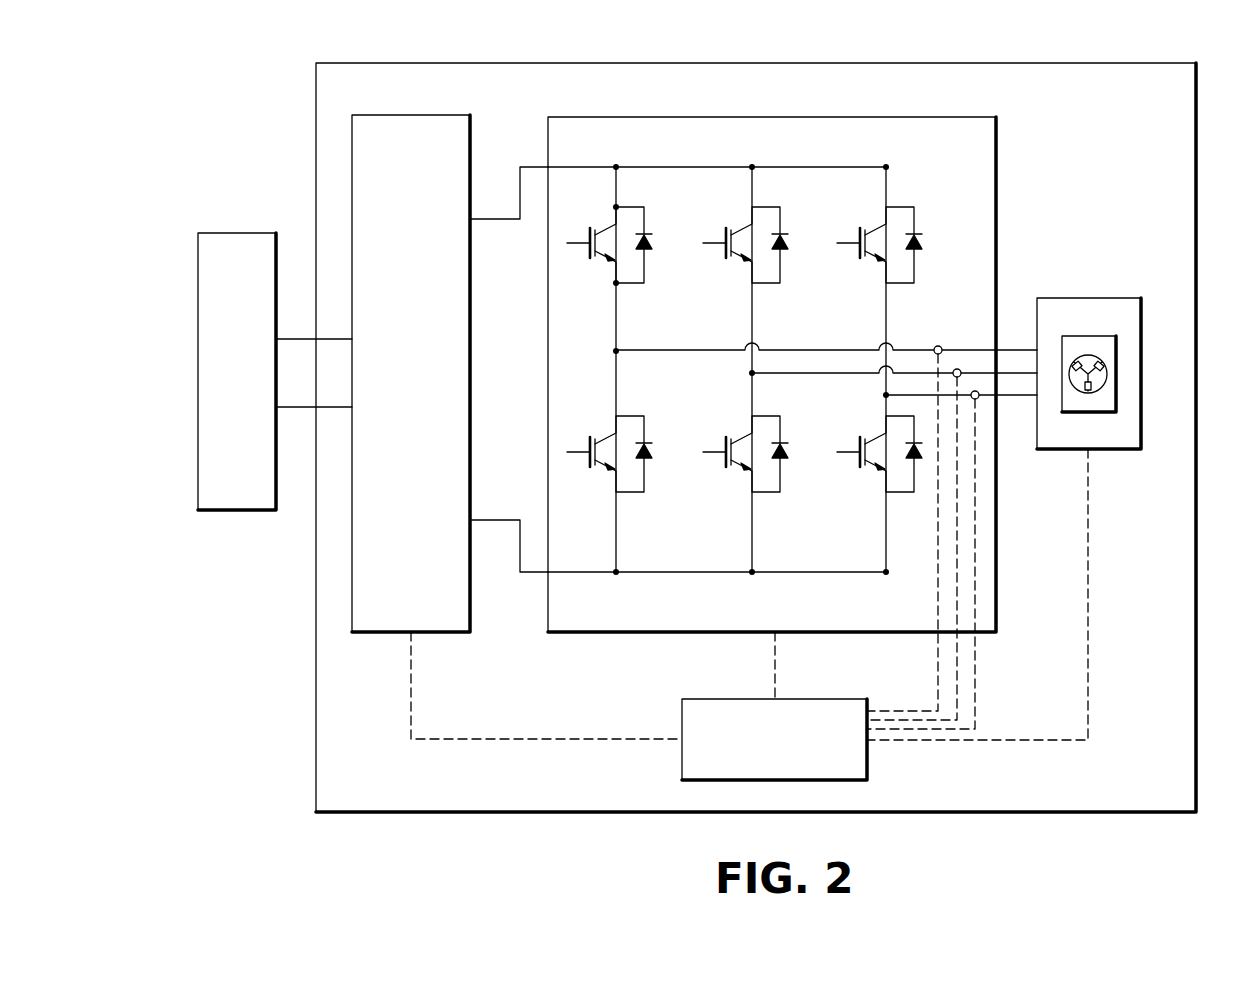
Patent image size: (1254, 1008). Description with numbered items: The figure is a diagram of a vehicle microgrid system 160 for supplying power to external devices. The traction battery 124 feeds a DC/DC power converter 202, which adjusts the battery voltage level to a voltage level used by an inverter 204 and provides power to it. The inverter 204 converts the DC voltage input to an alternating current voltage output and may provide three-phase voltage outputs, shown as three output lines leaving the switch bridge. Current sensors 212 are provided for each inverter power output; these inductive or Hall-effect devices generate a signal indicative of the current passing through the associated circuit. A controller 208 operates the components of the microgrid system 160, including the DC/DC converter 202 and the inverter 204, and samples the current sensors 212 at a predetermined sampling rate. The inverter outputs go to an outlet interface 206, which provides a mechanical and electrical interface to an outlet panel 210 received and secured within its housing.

The microgrid system 160 is at (1122, 63).
The traction battery 124 is at (258, 384).
The DC/DC power converter 202 is at (410, 115).
The inverter 204 is at (996, 181).
The outlet interface 206 is at (1088, 298).
The controller 208 is at (820, 699).
The outlet panel 210 is at (1116, 374).
The current sensors 212 is at (975, 391).